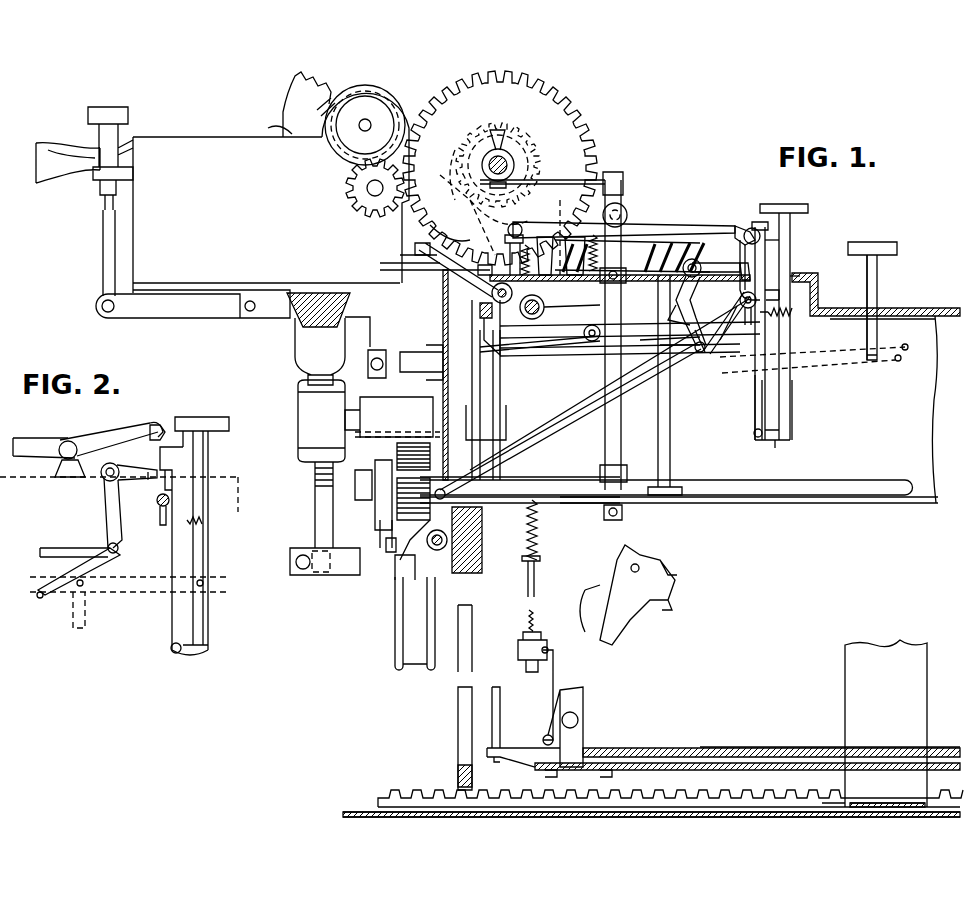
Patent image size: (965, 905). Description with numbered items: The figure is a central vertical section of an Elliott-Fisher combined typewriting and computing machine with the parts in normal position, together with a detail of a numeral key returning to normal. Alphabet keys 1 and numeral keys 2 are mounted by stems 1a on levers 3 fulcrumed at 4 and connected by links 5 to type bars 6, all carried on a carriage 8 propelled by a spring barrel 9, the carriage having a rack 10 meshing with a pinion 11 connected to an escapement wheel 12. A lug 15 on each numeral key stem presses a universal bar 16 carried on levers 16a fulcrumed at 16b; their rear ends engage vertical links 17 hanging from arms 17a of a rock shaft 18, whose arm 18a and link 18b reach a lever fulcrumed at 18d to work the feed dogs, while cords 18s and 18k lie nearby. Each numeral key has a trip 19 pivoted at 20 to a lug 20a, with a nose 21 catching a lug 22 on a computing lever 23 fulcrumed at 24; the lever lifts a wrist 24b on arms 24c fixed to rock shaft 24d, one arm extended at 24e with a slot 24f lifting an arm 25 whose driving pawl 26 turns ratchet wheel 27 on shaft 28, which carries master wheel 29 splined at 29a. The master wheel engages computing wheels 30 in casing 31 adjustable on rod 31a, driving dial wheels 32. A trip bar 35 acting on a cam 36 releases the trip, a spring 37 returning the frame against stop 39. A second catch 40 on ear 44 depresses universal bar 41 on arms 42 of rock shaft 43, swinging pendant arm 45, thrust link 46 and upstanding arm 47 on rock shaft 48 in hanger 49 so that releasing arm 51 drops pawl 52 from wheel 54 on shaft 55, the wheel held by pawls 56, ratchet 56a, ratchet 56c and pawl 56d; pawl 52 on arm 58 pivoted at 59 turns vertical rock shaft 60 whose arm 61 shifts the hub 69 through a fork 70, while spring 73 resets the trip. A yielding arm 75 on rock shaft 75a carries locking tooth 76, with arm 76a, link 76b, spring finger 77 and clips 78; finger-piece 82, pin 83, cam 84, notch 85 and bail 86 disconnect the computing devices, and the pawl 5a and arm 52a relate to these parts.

In FIG. 1, the alphabet keys 1 is at (872, 242).
In FIG. 1, the stems 1a is at (792, 410).
In FIG. 1, the numeral keys 2 is at (808, 208).
In FIG. 2, the numeral keys 2 is at (210, 435).
In FIG. 1, the levers 3 is at (735, 375).
In FIG. 1, the fulcrum 4 is at (656, 383).
In FIG. 1, the links 5 is at (543, 706).
In FIG. 1, the spring 5a is at (538, 550).
In FIG. 1, the type bars 6 is at (583, 697).
In FIG. 1, the carriage 8 is at (772, 503).
In FIG. 2, the carriage 8 is at (238, 495).
In FIG. 1, the spring barrel 9 is at (414, 664).
In FIG. 1, the rack 10 is at (390, 530).
In FIG. 1, the pinion 11 is at (431, 455).
In FIG. 1, the escapement wheel 12 is at (495, 470).
In FIG. 1, the lug 15 is at (818, 278).
In FIG. 1, the universal bar 16 is at (795, 333).
In FIG. 1, the levers 16a is at (603, 330).
In FIG. 1, the fulcrum 16b is at (596, 356).
In FIG. 1, the vertical links 17 is at (500, 412).
In FIG. 1, the arms 17a is at (480, 303).
In FIG. 1, the rock shaft 18 is at (544, 310).
In FIG. 1, the arm 18a is at (560, 312).
In FIG. 1, the link 18b is at (500, 358).
In FIG. 1, the fulcrum 18d is at (500, 433).
In FIG. 1, the cord 18s is at (900, 346).
In FIG. 1, the cord 18k is at (900, 363).
In FIG. 1, the trip 19 is at (755, 420).
In FIG. 2, the trip 19 is at (172, 563).
In FIG. 1, the pivot 20 is at (755, 434).
In FIG. 1, the lug 20a is at (776, 442).
In FIG. 1, the hook or nose 21 is at (752, 228).
In FIG. 2, the hook or nose 21 is at (160, 425).
In FIG. 1, the lugs 22 is at (770, 250).
In FIG. 2, the lugs 22 is at (150, 424).
In FIG. 1, the computing levers 23 is at (684, 225).
In FIG. 2, the computing levers 23 is at (108, 435).
In FIG. 1, the fulcrum 24 is at (552, 249).
In FIG. 2, the fulcrum 24 is at (68, 441).
In FIG. 1, the elongated wrists 24b is at (522, 226).
In FIG. 1, the arms 24c is at (572, 212).
In FIG. 1, the rock shaft 24d is at (627, 214).
In FIG. 1, the extension 24e is at (512, 208).
In FIG. 1, the slot 24f is at (445, 190).
In FIG. 1, the arm 25 is at (492, 164).
In FIG. 1, the driving pawl 26 is at (458, 160).
In FIG. 1, the ratchet wheel 27 is at (497, 130).
In FIG. 1, the shaft 28 is at (512, 180).
In FIG. 1, the master wheel 29 is at (556, 101).
In FIG. 1, the spline 29a is at (528, 150).
In FIG. 1, the computing wheels 30 is at (345, 196).
In FIG. 1, the casing 31 is at (213, 137).
In FIG. 1, the rod 31a is at (350, 296).
In FIG. 1, the dial wheels 32 is at (333, 151).
In FIG. 1, the trip-bar 35 is at (758, 298).
In FIG. 2, the trip-bar 35 is at (160, 508).
In FIG. 1, the cam or tappet 36 is at (760, 265).
In FIG. 1, the spring 37 is at (605, 230).
In FIG. 1, the stop 39 is at (488, 266).
In FIG. 1, the second nose or catch 40 is at (738, 229).
In FIG. 1, the universal bar 41 is at (745, 270).
In FIG. 2, the universal bar 41 is at (155, 468).
In FIG. 1, the arms 42 is at (705, 268).
In FIG. 1, the rock shaft 43 is at (684, 266).
In FIG. 1, the ear 44 is at (779, 236).
In FIG. 1, the pendant arm 45 is at (684, 302).
In FIG. 1, the thrust link 46 is at (592, 420).
In FIG. 2, the thrust link 46 is at (40, 598).
In FIG. 1, the upstanding arm 47 is at (483, 540).
In FIG. 1, the rock shaft 48 is at (458, 575).
In FIG. 1, the bearing or hanger 49 is at (425, 550).
In FIG. 1, the releasing arm 51 is at (390, 548).
In FIG. 1, the pawl 52 is at (395, 560).
In FIG. 1, the lever arm 52a is at (398, 568).
In FIG. 1, the wheel 54 is at (397, 450).
In FIG. 1, the shaft 55 is at (840, 482).
In FIG. 1, the pawls 56 is at (388, 512).
In FIG. 1, the ratchet 56a is at (360, 510).
In FIG. 1, the ratchet 56c is at (430, 394).
In FIG. 1, the pawl 56d is at (408, 412).
In FIG. 1, the arm 58 is at (590, 455).
In FIG. 1, the pivot 59 is at (378, 470).
In FIG. 1, the vertical rock shaft 60 is at (621, 428).
In FIG. 1, the horizontal arm 61 is at (596, 178).
In FIG. 1, the hub 69 is at (510, 153).
In FIG. 1, the fork 70 is at (508, 162).
In FIG. 1, the compression spring 73 is at (780, 310).
In FIG. 1, the yielding arm 75 is at (440, 272).
In FIG. 1, the rock shaft 75a is at (515, 293).
In FIG. 1, the locking tooth 76 is at (815, 323).
In FIG. 1, the arm 76a is at (505, 348).
In FIG. 1, the link 76b is at (648, 352).
In FIG. 2, the link 76b is at (40, 552).
In FIG. 1, the spring finger 77 is at (438, 258).
In FIG. 1, the clips 78 is at (424, 247).
In FIG. 1, the finger-piece 82 is at (742, 320).
In FIG. 1, the pin 83 is at (692, 302).
In FIG. 1, the cam 84 is at (733, 320).
In FIG. 1, the notch 85 is at (706, 334).
In FIG. 1, the bail or rod 86 is at (775, 318).